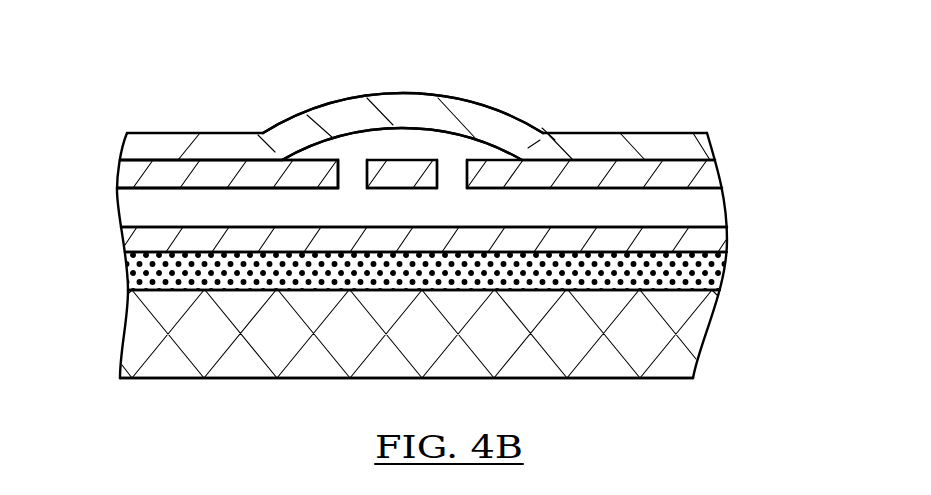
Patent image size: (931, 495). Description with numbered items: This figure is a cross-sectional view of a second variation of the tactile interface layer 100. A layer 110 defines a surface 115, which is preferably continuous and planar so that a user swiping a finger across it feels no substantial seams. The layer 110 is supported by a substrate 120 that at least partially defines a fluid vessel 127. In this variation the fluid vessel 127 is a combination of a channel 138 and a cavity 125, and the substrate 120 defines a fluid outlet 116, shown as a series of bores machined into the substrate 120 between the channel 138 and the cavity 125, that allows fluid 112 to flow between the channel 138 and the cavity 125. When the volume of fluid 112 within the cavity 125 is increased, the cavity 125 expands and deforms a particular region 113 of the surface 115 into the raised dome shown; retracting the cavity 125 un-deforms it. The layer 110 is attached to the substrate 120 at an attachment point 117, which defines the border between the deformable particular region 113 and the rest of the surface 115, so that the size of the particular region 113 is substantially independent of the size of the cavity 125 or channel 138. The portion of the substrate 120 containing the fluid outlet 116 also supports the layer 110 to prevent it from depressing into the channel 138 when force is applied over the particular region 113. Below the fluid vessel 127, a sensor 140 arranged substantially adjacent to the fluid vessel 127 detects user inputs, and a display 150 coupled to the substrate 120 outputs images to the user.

The tactile interface layer 100 is at (630, 77).
The layer 110 is at (344, 113).
The fluid 112 is at (617, 217).
The particular region 113 is at (500, 99).
The surface 115 is at (198, 133).
The fluid outlet 116 is at (328, 176).
The attachment point 117 is at (277, 151).
The substrate 120 is at (708, 177).
The cavity 125 is at (412, 148).
The fluid vessel 127 is at (466, 221).
The channel 138 is at (711, 218).
The sensor 140 is at (122, 270).
The display 150 is at (145, 335).